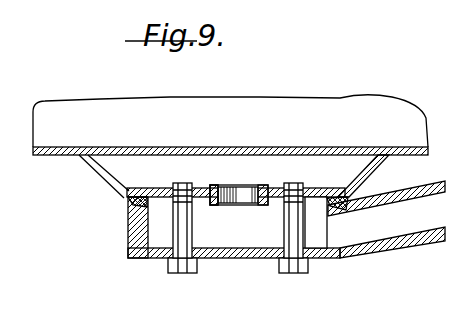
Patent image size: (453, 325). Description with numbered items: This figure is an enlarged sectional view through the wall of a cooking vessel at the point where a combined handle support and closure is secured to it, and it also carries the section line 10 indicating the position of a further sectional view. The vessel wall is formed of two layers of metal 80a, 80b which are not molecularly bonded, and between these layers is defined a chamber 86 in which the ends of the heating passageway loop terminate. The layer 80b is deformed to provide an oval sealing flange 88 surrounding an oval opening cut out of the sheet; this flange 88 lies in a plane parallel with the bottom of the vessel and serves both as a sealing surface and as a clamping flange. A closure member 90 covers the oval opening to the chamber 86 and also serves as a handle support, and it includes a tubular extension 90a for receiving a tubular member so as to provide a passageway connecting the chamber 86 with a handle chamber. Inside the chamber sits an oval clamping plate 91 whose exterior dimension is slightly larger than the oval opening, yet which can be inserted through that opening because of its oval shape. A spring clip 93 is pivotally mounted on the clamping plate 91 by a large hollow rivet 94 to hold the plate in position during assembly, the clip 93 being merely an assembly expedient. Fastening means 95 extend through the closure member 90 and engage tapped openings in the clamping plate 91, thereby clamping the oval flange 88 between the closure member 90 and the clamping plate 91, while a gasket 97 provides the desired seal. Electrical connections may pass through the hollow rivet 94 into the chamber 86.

The section line 10- 10 is at (258, 77).
The layer of metal 80a is at (98, 147).
The layer of metal 80b is at (379, 172).
The chamber 86 is at (213, 172).
The oval sealing flange 88 is at (130, 201).
The closure member 90 is at (328, 259).
The tubular extension 90a is at (398, 248).
The clamping plate 91 is at (313, 189).
The spring clip 93 is at (207, 198).
The hollow rivet 94 is at (252, 186).
The fastening means 95 is at (282, 231).
The gasket 97 is at (128, 226).